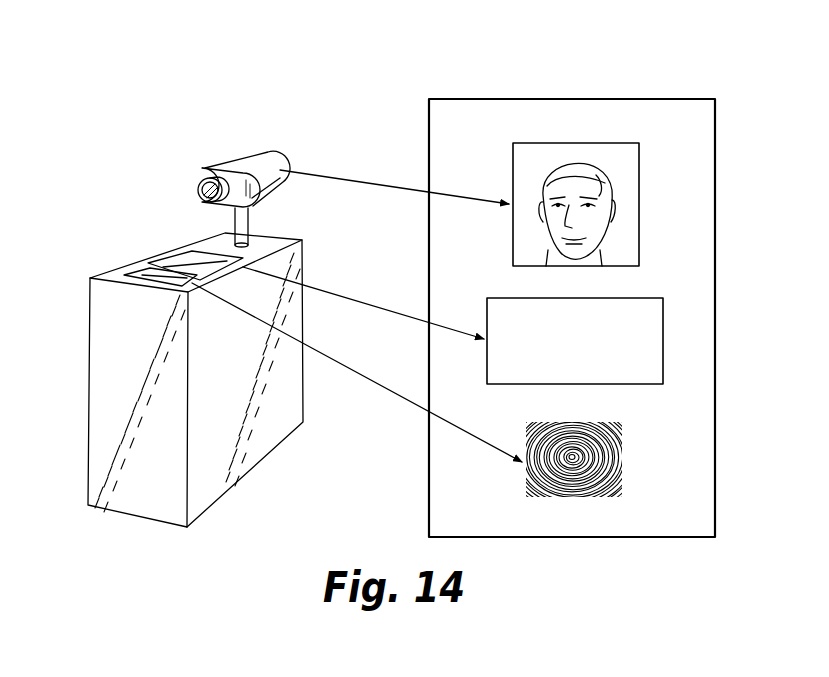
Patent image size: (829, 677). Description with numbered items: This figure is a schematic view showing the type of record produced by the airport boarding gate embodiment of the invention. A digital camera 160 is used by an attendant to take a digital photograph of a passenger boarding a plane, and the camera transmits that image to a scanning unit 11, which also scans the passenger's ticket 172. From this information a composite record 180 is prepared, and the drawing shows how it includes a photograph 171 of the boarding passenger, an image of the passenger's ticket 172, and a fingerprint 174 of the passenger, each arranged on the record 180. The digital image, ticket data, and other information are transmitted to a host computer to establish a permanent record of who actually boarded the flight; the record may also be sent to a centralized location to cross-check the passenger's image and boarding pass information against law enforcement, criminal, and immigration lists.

The scanning unit 11 is at (145, 257).
The digital camera 160 is at (245, 153).
The composite record 180 is at (613, 99).
The photograph 171 is at (640, 213).
The ticket 172 is at (663, 352).
The fingerprint 174 is at (625, 468).